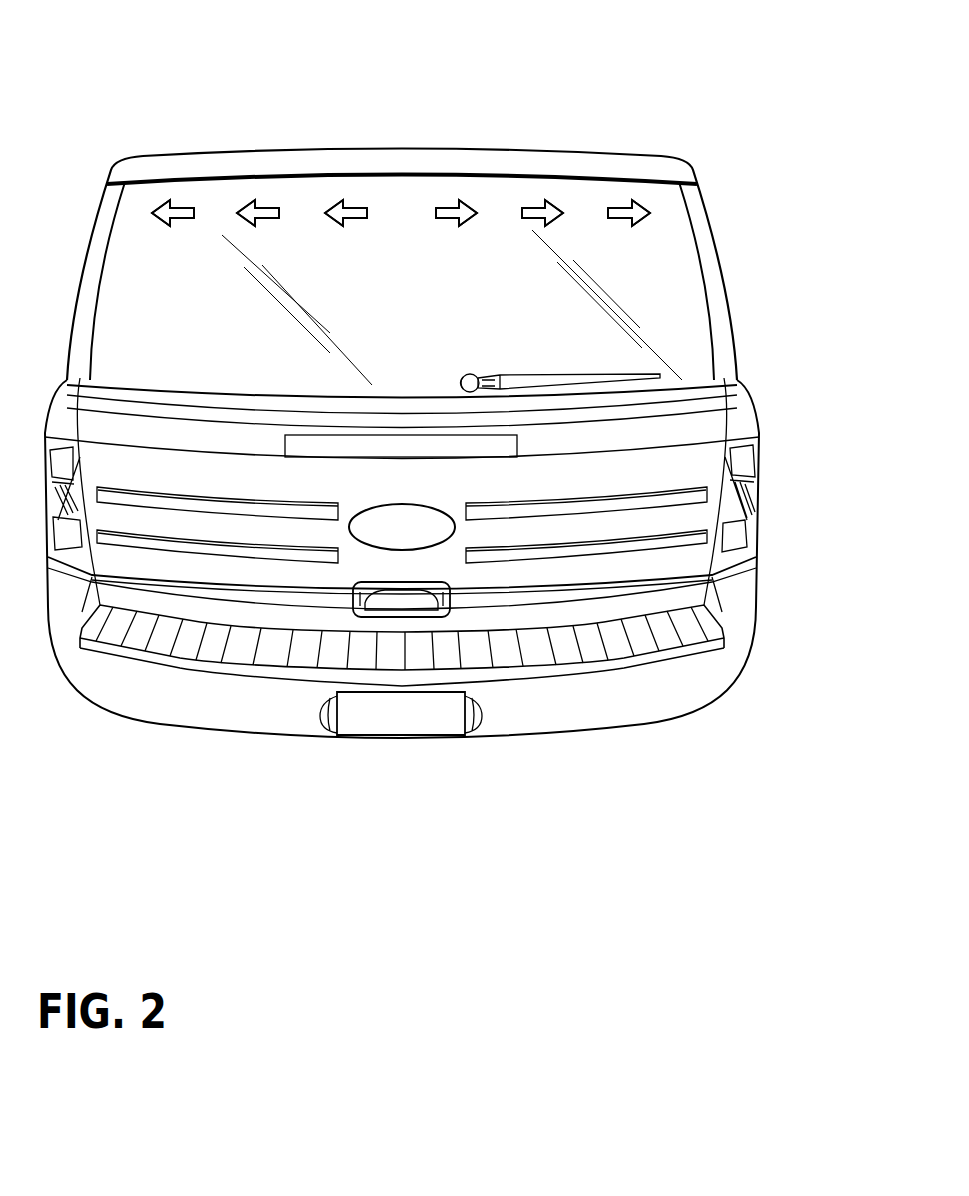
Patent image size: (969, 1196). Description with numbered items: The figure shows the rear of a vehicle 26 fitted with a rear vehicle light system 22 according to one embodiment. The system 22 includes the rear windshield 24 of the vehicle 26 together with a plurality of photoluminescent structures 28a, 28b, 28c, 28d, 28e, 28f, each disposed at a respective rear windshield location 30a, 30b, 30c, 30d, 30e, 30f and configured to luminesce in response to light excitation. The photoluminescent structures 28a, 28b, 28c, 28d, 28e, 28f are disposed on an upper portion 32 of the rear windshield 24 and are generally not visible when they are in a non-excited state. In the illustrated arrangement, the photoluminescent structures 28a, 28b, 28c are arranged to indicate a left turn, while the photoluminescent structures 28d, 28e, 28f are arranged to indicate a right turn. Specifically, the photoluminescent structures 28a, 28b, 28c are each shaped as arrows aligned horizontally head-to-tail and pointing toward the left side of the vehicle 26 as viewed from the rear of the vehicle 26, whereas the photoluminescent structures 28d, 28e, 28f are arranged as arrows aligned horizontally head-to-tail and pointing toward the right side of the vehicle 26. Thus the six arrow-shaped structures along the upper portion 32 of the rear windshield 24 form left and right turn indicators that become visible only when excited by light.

The rear vehicle light system 22 is at (782, 228).
The rear windshield 24 is at (662, 300).
The vehicle 26 is at (697, 150).
The photoluminescent structure 28a is at (165, 202).
The photoluminescent structure 28b is at (250, 202).
The photoluminescent structure 28c is at (338, 202).
The photoluminescent structure 28d is at (462, 202).
The photoluminescent structure 28e is at (548, 202).
The photoluminescent structure 28f is at (635, 202).
The rear windshield location 30a is at (177, 207).
The rear windshield location 30b is at (262, 207).
The rear windshield location 30c is at (350, 207).
The rear windshield location 30d is at (470, 205).
The rear windshield location 30e is at (556, 205).
The rear windshield location 30f is at (643, 205).
The upper portion 32 is at (395, 200).